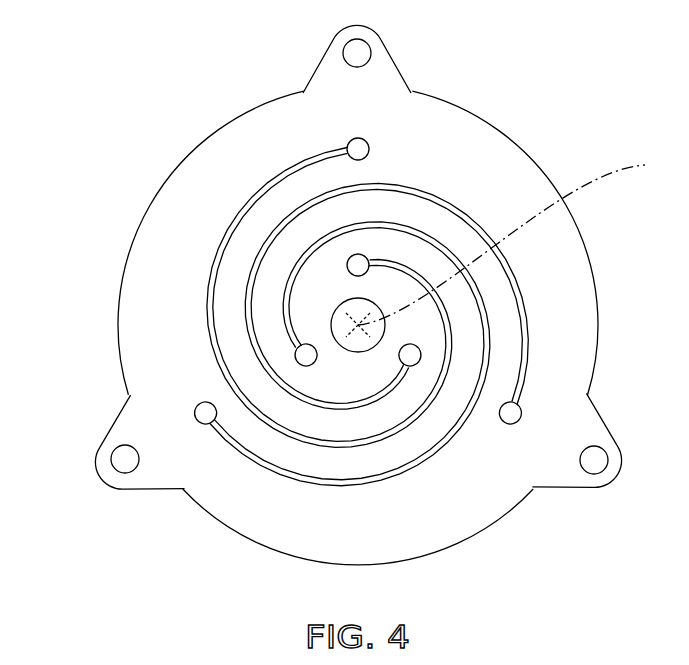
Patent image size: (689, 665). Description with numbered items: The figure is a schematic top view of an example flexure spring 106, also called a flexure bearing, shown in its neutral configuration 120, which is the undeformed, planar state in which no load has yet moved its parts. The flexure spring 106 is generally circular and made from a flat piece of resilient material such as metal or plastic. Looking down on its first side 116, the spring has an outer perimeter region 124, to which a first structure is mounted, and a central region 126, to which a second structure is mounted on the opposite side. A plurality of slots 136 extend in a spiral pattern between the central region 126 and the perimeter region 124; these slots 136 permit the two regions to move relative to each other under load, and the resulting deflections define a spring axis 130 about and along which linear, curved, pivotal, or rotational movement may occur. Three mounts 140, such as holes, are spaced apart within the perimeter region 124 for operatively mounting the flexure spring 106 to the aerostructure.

The flexure spring 106 is at (347, 300).
The first side 116 is at (573, 291).
The neutral configuration 120 is at (347, 300).
The perimeter region 124 is at (253, 500).
The central region 126 is at (318, 324).
The spring axis 130 is at (518, 239).
The slots 136 is at (400, 225).
The mounts 140 is at (358, 44).